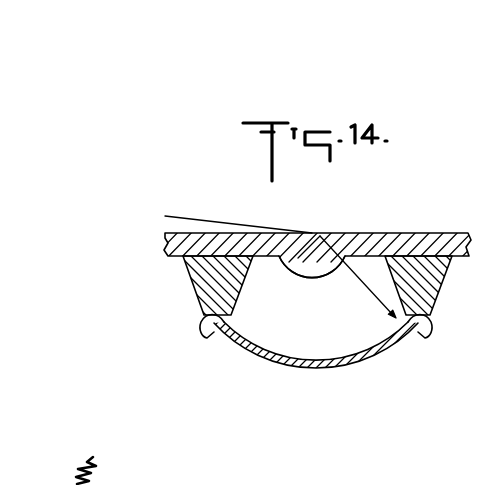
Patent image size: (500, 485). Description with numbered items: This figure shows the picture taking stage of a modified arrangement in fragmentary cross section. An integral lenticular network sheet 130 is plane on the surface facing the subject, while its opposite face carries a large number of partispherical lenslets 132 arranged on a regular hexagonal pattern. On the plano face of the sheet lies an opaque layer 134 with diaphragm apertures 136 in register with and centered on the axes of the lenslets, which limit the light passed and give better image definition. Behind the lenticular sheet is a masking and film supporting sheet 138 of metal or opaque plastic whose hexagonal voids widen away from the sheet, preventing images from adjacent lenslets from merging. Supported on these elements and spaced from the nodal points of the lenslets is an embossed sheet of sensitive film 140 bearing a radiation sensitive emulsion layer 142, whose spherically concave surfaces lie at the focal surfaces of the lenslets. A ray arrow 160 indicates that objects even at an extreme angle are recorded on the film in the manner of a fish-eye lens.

The lenticular network sheet 130 is at (457, 232).
The partispherical lenslets 132 is at (299, 277).
The opaque layer 134 is at (413, 232).
The diaphragm apertures 136 is at (320, 236).
The masking and film supporting sheet 138 is at (190, 281).
The embossed sheet of sensitive film 140 is at (311, 369).
The radiation sensitive emulsion layer 142 is at (308, 355).
The ray arrow 160 is at (192, 214).